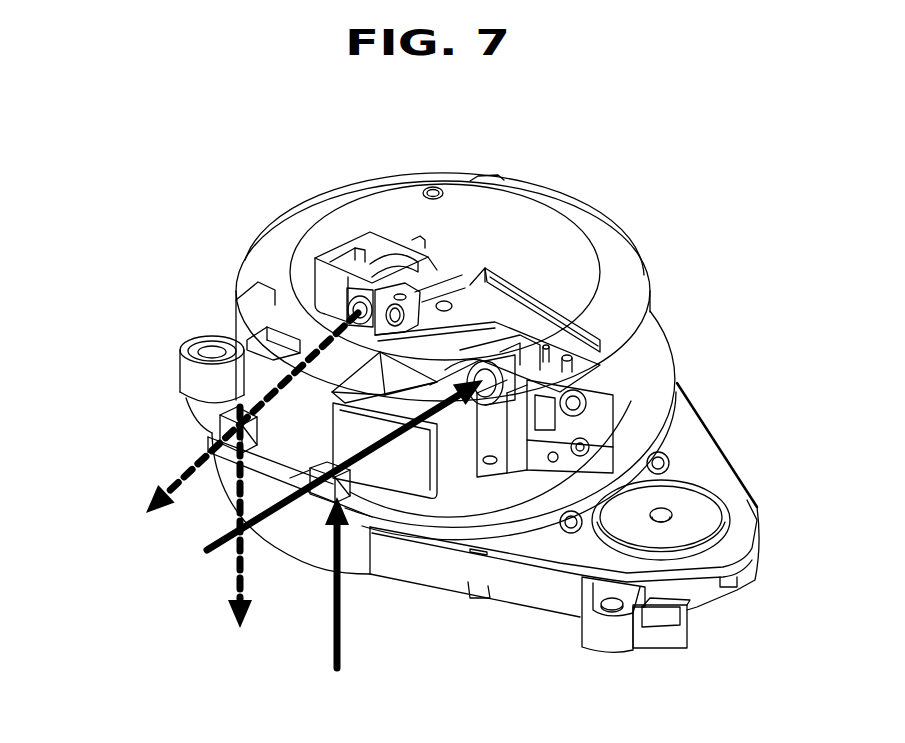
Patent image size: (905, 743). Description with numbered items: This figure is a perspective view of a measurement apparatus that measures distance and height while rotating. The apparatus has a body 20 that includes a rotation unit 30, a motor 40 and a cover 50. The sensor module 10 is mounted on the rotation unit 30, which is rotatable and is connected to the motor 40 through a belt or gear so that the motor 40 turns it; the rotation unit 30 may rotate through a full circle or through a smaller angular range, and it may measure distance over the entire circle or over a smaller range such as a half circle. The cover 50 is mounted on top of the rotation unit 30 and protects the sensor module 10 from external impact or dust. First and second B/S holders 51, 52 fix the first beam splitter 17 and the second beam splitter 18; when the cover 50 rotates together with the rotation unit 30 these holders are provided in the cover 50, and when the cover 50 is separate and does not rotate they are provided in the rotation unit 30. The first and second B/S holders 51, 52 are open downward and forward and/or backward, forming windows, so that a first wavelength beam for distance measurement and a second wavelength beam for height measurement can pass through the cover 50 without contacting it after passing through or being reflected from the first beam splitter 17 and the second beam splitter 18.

The cover 50 is at (295, 200).
The sensor module 10 is at (518, 272).
The rotation unit 30 is at (655, 327).
The body 20 is at (677, 453).
The motor 40 is at (717, 492).
The first B/S holder 51 is at (253, 373).
The second B/S holder 52 is at (128, 355).
The first beam splitter 17 is at (217, 428).
The second beam splitter 18 is at (128, 448).